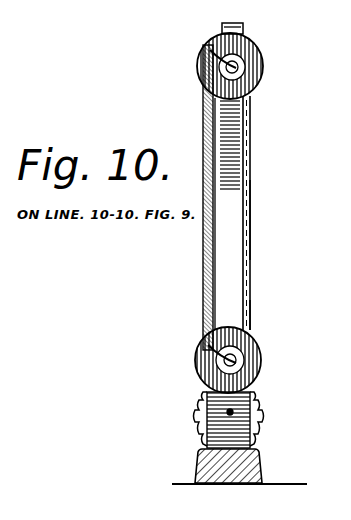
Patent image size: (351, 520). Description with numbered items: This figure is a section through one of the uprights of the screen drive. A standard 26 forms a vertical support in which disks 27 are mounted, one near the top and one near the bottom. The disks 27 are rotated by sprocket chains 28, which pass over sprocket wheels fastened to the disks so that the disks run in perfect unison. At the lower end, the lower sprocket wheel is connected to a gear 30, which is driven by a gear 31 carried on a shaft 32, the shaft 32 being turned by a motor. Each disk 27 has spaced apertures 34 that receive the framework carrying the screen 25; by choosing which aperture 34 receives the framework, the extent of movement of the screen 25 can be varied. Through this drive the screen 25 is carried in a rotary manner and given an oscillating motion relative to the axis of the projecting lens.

The screen 25 is at (204, 270).
The standards 26 is at (245, 283).
The disks 27 is at (263, 70).
The sprocket chains 28 is at (250, 249).
The gears 30 is at (250, 326).
The gears 31 is at (262, 421).
The shaft 32 is at (262, 400).
The spaced apertures 34 is at (226, 60).